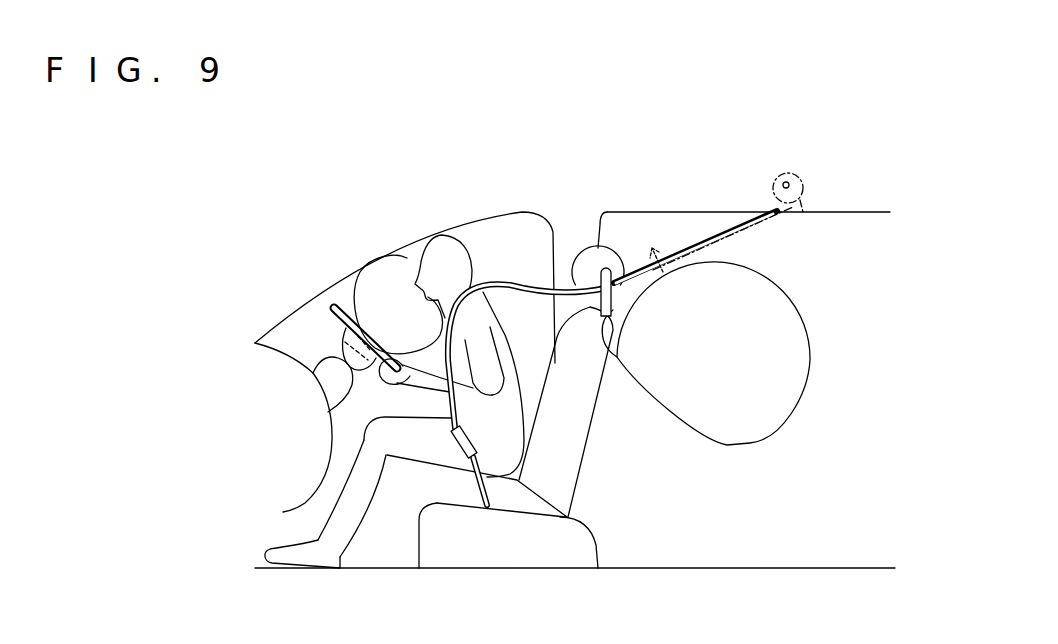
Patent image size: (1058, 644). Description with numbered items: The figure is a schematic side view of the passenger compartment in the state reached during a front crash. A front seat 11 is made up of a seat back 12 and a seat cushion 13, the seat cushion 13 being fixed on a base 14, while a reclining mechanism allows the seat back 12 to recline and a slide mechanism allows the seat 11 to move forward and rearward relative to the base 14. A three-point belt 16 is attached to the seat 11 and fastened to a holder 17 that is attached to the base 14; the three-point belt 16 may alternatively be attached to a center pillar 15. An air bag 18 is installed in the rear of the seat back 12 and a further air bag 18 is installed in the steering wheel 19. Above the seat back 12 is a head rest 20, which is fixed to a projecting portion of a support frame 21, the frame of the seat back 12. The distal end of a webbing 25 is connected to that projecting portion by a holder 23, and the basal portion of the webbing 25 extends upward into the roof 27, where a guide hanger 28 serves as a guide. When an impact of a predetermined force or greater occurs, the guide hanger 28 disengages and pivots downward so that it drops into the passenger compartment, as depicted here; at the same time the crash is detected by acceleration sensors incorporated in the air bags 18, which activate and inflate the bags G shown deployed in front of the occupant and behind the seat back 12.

The front seat 11 is at (571, 427).
The seat back 12 is at (560, 482).
The seat cushion 13 is at (413, 487).
The base 14 is at (577, 547).
The center pillar 15 is at (578, 223).
The three-point belt 16 is at (440, 406).
The holder 17 is at (479, 493).
The air bag 18 is at (344, 339).
The steering wheel 19 is at (333, 305).
The head rest 20 is at (612, 233).
The support frame 21 is at (572, 285).
The holder 23 is at (613, 288).
The webbing 25 is at (722, 240).
The roof 27 is at (873, 213).
The guide hanger 28 is at (770, 217).
The bag G is at (373, 285).